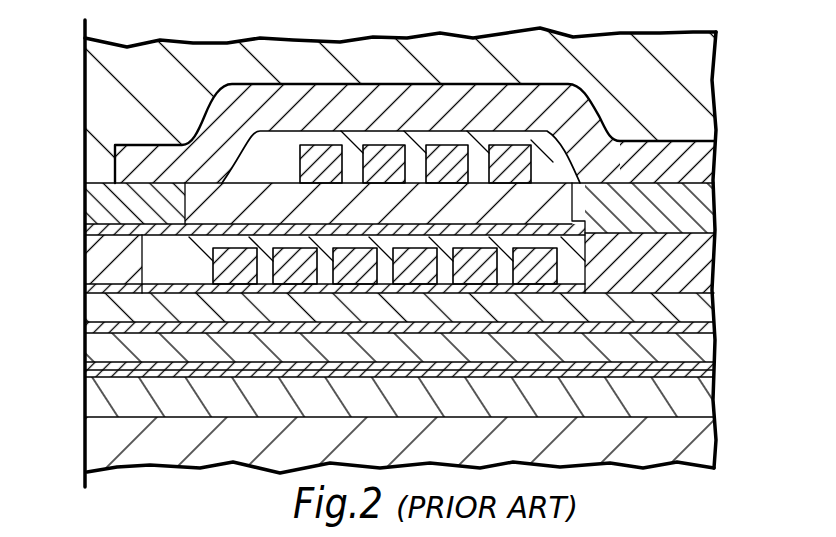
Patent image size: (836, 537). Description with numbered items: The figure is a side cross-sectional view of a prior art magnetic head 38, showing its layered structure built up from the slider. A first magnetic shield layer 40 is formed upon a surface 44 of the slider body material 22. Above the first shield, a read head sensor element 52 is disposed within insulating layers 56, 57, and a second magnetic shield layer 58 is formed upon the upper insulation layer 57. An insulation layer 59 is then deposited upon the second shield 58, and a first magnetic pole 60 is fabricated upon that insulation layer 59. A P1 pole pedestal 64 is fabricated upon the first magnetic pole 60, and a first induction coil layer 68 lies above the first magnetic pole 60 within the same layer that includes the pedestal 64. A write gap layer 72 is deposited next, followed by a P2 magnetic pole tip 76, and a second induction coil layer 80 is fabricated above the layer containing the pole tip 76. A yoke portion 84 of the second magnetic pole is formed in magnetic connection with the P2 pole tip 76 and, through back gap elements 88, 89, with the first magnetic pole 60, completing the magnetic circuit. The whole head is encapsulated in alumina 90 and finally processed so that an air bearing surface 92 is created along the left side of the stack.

The slider body material 22 is at (97, 437).
The magnetic head 38 is at (156, 34).
The first magnetic shield layer 40 is at (97, 400).
The surface 44 is at (189, 408).
The read head sensor element 52 is at (97, 378).
The insulating layer 56 is at (266, 373).
The insulating layer 57 is at (376, 366).
The second magnetic shield layer 58 is at (97, 350).
The insulation layer 59 is at (97, 330).
The first magnetic pole 60 is at (97, 308).
The P1 pole pedestal 64 is at (97, 278).
The first induction coil layer 68 is at (174, 251).
The write gap layer 72 is at (97, 230).
The P2 magnetic pole tip 76 is at (97, 197).
The second induction coil layer 80 is at (273, 150).
The yoke portion 84 is at (210, 117).
The back gap element 88 is at (700, 213).
The back gap element 89 is at (693, 266).
The alumina 90 is at (705, 82).
The air bearing surface 92 is at (86, 37).